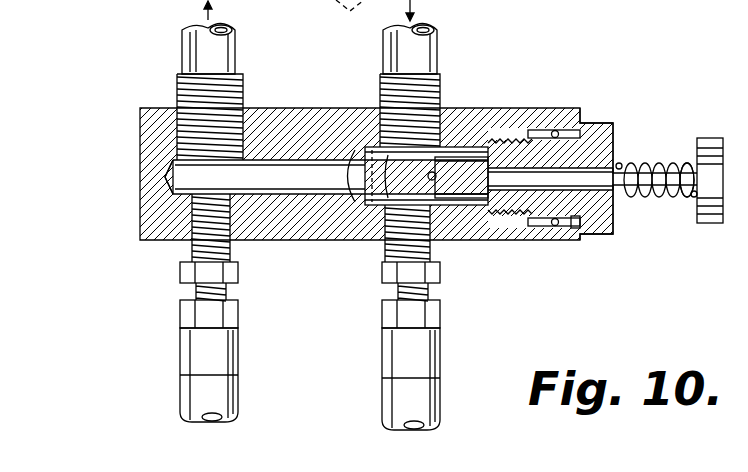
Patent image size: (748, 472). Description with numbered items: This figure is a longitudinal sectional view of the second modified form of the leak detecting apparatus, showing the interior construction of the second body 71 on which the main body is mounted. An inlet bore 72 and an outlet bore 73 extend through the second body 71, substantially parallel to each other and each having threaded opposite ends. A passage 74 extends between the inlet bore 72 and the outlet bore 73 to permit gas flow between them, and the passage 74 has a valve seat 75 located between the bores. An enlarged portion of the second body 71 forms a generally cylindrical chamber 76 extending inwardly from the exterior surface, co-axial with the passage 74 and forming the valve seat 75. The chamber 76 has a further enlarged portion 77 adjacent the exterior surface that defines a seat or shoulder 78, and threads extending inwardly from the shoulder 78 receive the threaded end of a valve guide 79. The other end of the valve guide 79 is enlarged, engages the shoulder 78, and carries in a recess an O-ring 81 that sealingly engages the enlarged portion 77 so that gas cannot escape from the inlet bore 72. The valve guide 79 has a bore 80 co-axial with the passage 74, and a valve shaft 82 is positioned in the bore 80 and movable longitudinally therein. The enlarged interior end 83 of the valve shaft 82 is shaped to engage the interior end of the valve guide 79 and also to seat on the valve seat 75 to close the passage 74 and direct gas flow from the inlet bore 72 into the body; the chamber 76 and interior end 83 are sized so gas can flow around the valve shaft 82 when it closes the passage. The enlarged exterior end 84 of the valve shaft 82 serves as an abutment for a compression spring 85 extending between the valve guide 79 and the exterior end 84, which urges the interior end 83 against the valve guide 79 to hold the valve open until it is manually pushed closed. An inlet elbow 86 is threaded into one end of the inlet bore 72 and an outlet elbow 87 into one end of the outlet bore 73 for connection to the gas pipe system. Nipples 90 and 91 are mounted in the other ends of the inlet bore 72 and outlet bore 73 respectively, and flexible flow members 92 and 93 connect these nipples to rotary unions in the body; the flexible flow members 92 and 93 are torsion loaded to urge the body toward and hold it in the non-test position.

The second body 71 is at (140, 228).
The inlet bore 72 is at (370, 147).
The outlet bore 73 is at (171, 172).
The passage 74 is at (300, 195).
The valve seat 75 is at (355, 152).
The chamber 76 is at (378, 206).
The further enlarged portion 77 is at (574, 228).
The seat or shoulder 78 is at (530, 227).
The valve guide 79 is at (610, 123).
The bore 80 is at (598, 190).
The O-ring 81 is at (568, 132).
The valve shaft 82 is at (630, 163).
The interior end 83 is at (470, 206).
The exterior end 84 is at (720, 224).
The compression spring 85 is at (692, 196).
The inlet elbow 86 is at (438, 52).
The outlet elbow 87 is at (234, 50).
The nipple 90 is at (440, 268).
The nipple 91 is at (231, 252).
The flexible flow member 92 is at (440, 424).
The flexible flow member 93 is at (236, 416).